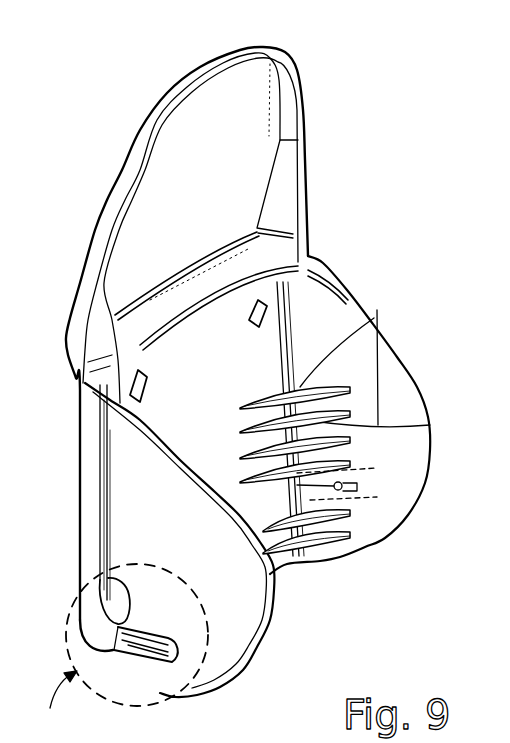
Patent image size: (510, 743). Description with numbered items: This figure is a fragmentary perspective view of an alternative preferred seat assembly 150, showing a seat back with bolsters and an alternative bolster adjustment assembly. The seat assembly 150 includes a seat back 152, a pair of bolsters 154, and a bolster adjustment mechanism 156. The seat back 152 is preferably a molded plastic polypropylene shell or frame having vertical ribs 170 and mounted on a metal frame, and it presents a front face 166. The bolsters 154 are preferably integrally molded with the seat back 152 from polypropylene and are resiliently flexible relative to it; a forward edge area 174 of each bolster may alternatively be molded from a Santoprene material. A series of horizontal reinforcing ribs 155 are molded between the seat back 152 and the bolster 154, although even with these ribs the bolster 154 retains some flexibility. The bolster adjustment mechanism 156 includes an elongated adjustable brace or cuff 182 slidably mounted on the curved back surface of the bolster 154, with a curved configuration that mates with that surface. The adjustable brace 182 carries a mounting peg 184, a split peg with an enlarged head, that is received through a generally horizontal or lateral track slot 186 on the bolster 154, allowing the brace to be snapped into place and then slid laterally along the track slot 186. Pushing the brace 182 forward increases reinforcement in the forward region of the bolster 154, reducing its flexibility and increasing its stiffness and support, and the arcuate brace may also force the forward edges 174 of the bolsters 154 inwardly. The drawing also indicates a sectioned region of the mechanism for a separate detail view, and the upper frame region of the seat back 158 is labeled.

The seat assembly 150 is at (345, 183).
The seat back 152 is at (262, 286).
The bolsters 154 is at (356, 372).
The horizontal reinforcing ribs 155 is at (373, 320).
The bolster adjustment mechanism 156 is at (147, 670).
The headband frame 158 is at (248, 107).
The front face 166 is at (211, 375).
The vertical ribs 170 is at (80, 546).
The forward edge area 174 is at (397, 372).
The adjustable brace 182 is at (100, 575).
The mounting peg 184 is at (357, 487).
The track slot 186 is at (357, 486).